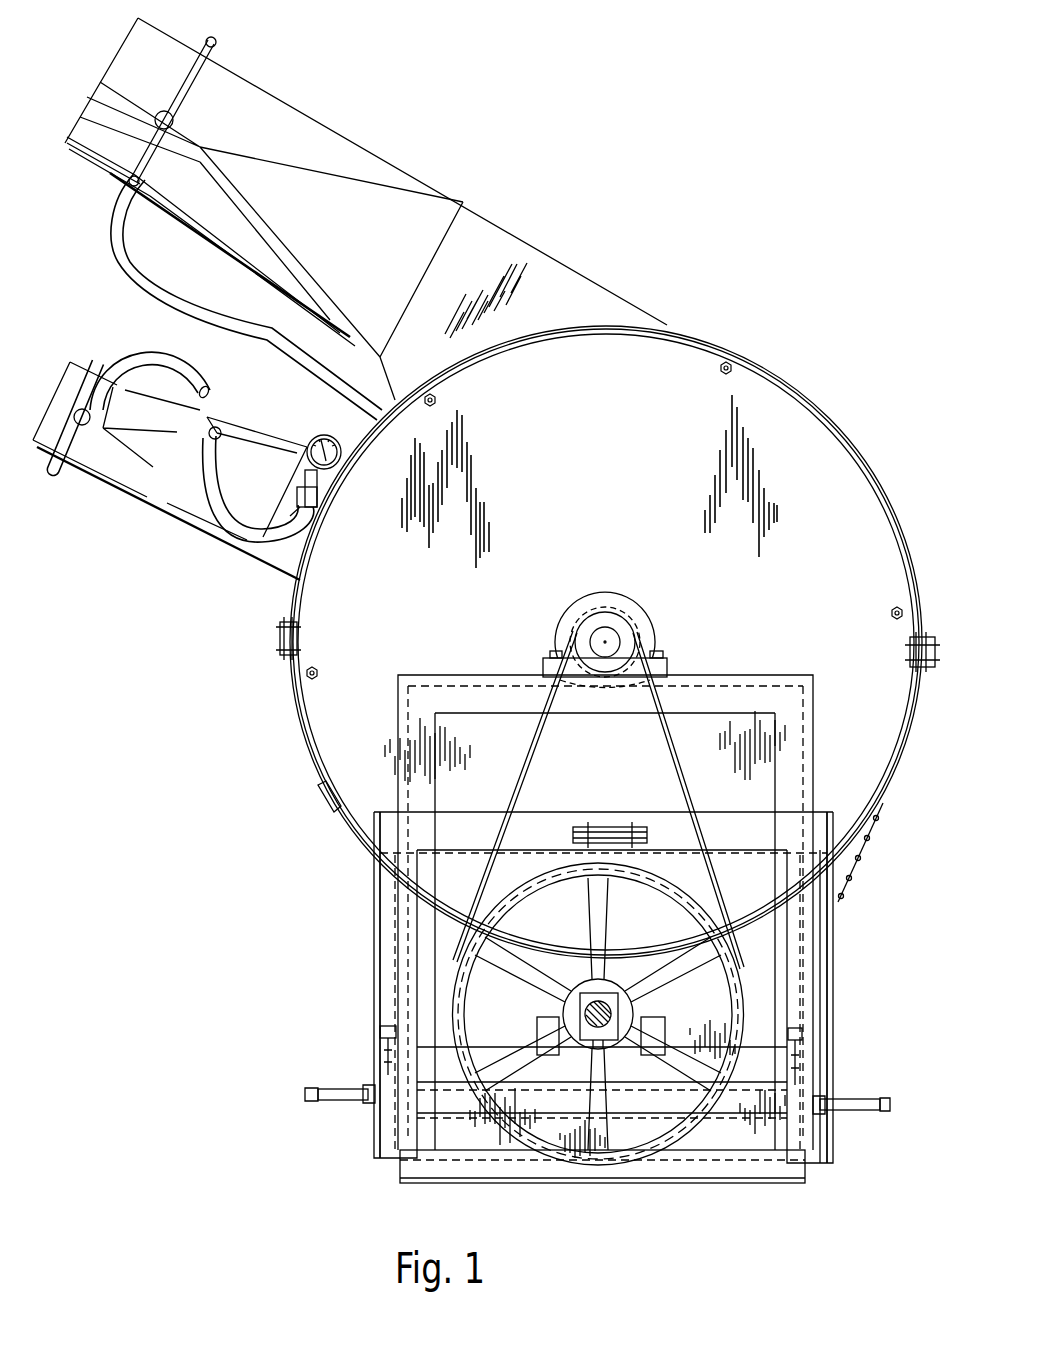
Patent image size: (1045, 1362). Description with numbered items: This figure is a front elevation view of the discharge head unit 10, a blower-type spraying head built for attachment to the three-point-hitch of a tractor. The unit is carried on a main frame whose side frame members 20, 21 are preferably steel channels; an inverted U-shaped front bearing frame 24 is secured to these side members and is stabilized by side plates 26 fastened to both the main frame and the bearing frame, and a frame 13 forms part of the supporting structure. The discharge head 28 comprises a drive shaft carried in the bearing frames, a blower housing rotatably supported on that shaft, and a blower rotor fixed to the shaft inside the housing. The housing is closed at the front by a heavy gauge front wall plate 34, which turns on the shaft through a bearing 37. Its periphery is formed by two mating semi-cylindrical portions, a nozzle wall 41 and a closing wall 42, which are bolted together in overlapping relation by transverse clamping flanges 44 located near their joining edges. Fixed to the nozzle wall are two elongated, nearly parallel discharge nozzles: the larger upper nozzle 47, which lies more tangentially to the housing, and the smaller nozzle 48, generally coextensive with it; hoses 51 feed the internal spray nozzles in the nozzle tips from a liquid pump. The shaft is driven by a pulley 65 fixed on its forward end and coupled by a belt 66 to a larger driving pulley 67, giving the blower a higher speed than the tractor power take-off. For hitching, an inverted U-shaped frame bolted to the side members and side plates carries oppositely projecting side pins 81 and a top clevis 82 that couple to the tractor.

The discharge head unit 10 is at (252, 858).
The frame 13 is at (372, 962).
The side frame member 20 is at (368, 1026).
The side frame member 21 is at (463, 1180).
The front bearing frame 24 is at (740, 690).
The side plate 26 is at (374, 908).
The discharge head 28 is at (803, 371).
The front wall plate 34 is at (694, 352).
The bearing 37 is at (638, 612).
The nozzle wall 41 is at (855, 440).
The closing wall 42 is at (305, 742).
The clamping flange 44 is at (278, 652).
The upper discharge nozzle 47 is at (332, 134).
The smaller discharge nozzle 48 is at (190, 496).
The hose 51 is at (127, 264).
The pulley 65 is at (578, 626).
The belt 66 is at (540, 735).
The driving pulley 67 is at (613, 915).
The side pin 81 is at (350, 1105).
The top clevis 82 is at (604, 826).